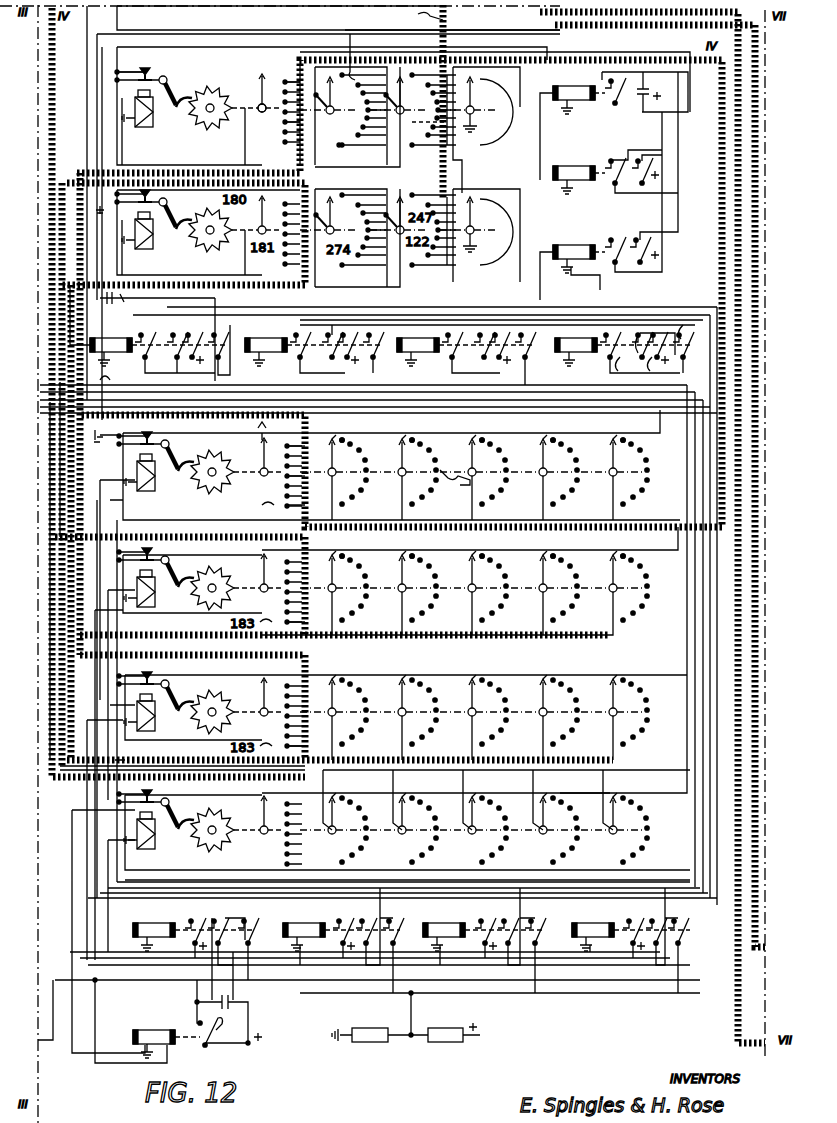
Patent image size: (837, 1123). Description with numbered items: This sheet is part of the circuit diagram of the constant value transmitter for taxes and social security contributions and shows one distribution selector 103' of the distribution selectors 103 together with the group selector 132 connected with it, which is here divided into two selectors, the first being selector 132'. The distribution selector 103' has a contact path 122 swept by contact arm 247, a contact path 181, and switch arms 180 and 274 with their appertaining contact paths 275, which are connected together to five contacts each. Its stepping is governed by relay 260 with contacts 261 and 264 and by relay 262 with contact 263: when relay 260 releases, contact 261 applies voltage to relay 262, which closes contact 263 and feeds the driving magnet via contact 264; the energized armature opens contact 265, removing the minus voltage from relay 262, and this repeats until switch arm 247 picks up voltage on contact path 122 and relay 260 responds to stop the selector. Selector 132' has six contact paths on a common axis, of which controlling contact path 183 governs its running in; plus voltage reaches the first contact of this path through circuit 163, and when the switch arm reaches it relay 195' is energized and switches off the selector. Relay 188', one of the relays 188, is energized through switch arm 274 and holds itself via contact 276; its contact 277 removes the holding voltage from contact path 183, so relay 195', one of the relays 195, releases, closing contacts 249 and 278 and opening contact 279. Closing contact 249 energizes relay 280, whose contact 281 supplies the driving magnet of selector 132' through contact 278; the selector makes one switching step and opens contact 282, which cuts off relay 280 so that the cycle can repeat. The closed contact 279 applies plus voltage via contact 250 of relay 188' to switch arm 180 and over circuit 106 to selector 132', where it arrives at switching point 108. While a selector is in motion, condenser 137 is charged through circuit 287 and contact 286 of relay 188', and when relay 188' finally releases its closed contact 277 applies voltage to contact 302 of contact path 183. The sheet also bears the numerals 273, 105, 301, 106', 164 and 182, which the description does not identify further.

The conductor 273 is at (197, 32).
The conductor 105 is at (415, 13).
The conductor 301 is at (367, 52).
The contact 265 is at (146, 68).
The switch arm 180 is at (273, 84).
The shaft 106' is at (268, 101).
The distribution selector 103' is at (207, 106).
The contact path 181 is at (280, 136).
The switch arm 274 is at (343, 110).
The contact paths 275 is at (338, 147).
The contact arm 247 is at (413, 110).
The contact path 122 is at (412, 142).
The relay 262 is at (577, 83).
The contact 263 is at (610, 106).
The relay 260 is at (577, 161).
The contact 264 is at (612, 162).
The contact 261 is at (644, 162).
The distribution selectors 103 is at (207, 232).
The condenser 137 is at (120, 304).
The relay 188 is at (159, 344).
The circuit 287 is at (103, 334).
The relay 188' is at (624, 344).
The contact 250 is at (650, 326).
The contact 286 is at (686, 324).
The contact 276 is at (620, 373).
The contact 277 is at (657, 373).
The contact 282 is at (146, 438).
The contact 302 is at (257, 442).
The circuit 163 is at (284, 453).
The contact 164 is at (283, 483).
The selector 132' is at (390, 566).
The controlling contact path 183 is at (267, 498).
The switching point 108 is at (440, 470).
The contact 182 is at (437, 482).
The circuit 106 is at (472, 509).
The selector 132 is at (387, 816).
The relay 195' is at (194, 926).
The contact 249 is at (200, 926).
The contact 278 is at (242, 924).
The contact 279 is at (258, 936).
The relay 195 is at (343, 926).
The relay 280 is at (160, 1025).
The contact 281 is at (218, 1048).